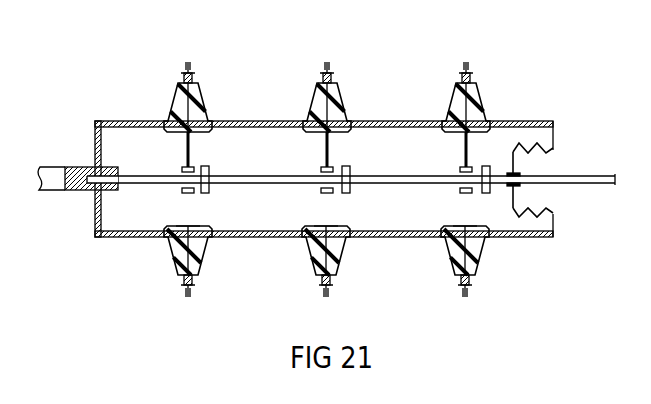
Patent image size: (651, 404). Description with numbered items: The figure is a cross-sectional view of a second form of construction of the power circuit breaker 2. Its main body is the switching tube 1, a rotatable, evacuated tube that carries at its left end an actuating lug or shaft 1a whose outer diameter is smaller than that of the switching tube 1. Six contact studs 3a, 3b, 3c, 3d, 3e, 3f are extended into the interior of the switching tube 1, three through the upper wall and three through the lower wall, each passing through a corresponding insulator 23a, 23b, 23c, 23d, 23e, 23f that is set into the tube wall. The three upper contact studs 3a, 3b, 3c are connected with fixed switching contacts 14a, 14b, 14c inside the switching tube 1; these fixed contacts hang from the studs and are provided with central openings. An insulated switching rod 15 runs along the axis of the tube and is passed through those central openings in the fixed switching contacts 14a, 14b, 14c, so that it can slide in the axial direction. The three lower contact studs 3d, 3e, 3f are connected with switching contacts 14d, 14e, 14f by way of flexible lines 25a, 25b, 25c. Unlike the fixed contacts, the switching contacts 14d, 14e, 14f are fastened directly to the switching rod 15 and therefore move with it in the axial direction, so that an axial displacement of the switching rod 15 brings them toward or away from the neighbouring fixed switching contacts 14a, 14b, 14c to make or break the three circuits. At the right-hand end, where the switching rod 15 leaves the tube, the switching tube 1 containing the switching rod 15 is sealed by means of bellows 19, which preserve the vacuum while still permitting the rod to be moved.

The switching tube 1 is at (95, 135).
The actuating lug 1a is at (63, 167).
The power circuit breaker 2 is at (123, 200).
The contact stud 3a is at (181, 80).
The contact stud 3b is at (320, 80).
The contact stud 3c is at (459, 80).
The contact stud 3d is at (196, 283).
The contact stud 3e is at (334, 283).
The contact stud 3f is at (471, 283).
The fixed switching contact 14a is at (182, 168).
The fixed switching contact 14b is at (321, 168).
The fixed switching contact 14c is at (460, 168).
The switching contact 14d is at (205, 166).
The switching contact 14e is at (346, 166).
The switching contact 14f is at (497, 153).
The switching rod 15 is at (568, 184).
The bellows 19 is at (543, 152).
The insulator 23a is at (174, 103).
The insulator 23b is at (313, 103).
The insulator 23c is at (452, 103).
The insulator 23d is at (174, 263).
The insulator 23e is at (313, 263).
The insulator 23f is at (452, 263).
The flexible line 25a is at (192, 225).
The flexible line 25b is at (328, 225).
The flexible line 25c is at (467, 224).